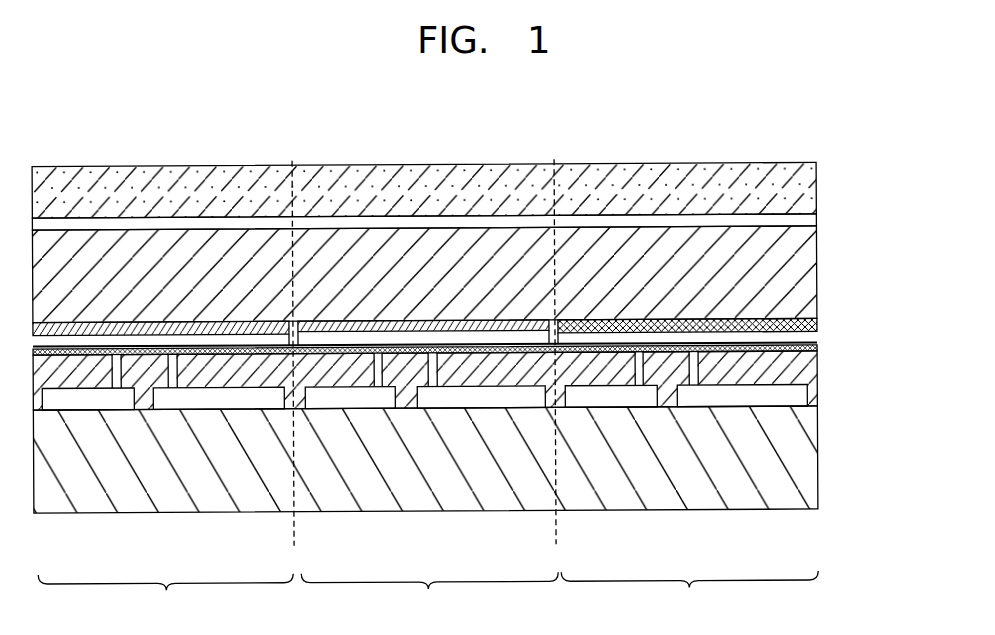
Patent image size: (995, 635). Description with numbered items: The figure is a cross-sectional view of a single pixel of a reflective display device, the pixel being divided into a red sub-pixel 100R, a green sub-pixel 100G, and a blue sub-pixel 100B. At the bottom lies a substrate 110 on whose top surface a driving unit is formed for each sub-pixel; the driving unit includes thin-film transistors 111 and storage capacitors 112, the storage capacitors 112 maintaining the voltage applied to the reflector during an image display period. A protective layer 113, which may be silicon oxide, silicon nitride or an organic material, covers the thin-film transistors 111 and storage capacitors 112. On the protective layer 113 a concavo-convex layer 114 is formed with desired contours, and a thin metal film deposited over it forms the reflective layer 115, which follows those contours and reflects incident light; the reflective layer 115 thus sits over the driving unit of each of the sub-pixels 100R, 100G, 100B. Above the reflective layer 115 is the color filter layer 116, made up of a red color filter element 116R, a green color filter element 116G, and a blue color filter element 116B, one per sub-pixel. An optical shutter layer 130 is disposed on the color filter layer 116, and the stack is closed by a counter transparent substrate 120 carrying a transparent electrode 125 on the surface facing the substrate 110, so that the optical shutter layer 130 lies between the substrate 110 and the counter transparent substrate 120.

The red sub-pixel 100R is at (165, 595).
The green sub-pixel 100G is at (429, 593).
The blue sub-pixel 100B is at (689, 592).
The substrate 110 is at (817, 453).
The thin-film transistors 111 is at (85, 400).
The storage capacitors 112 is at (221, 395).
The protective layer 113 is at (817, 376).
The concavo-convex layer 114 is at (817, 347).
The reflective layer 115 is at (143, 340).
The color filter layer 116 is at (475, 230).
The red color filter element 116R is at (157, 320).
The green color filter element 116G is at (428, 320).
The blue color filter element 116B is at (687, 320).
The counter transparent substrate 120 is at (817, 190).
The transparent electrode 125 is at (817, 221).
The optical shutter layer 130 is at (817, 275).